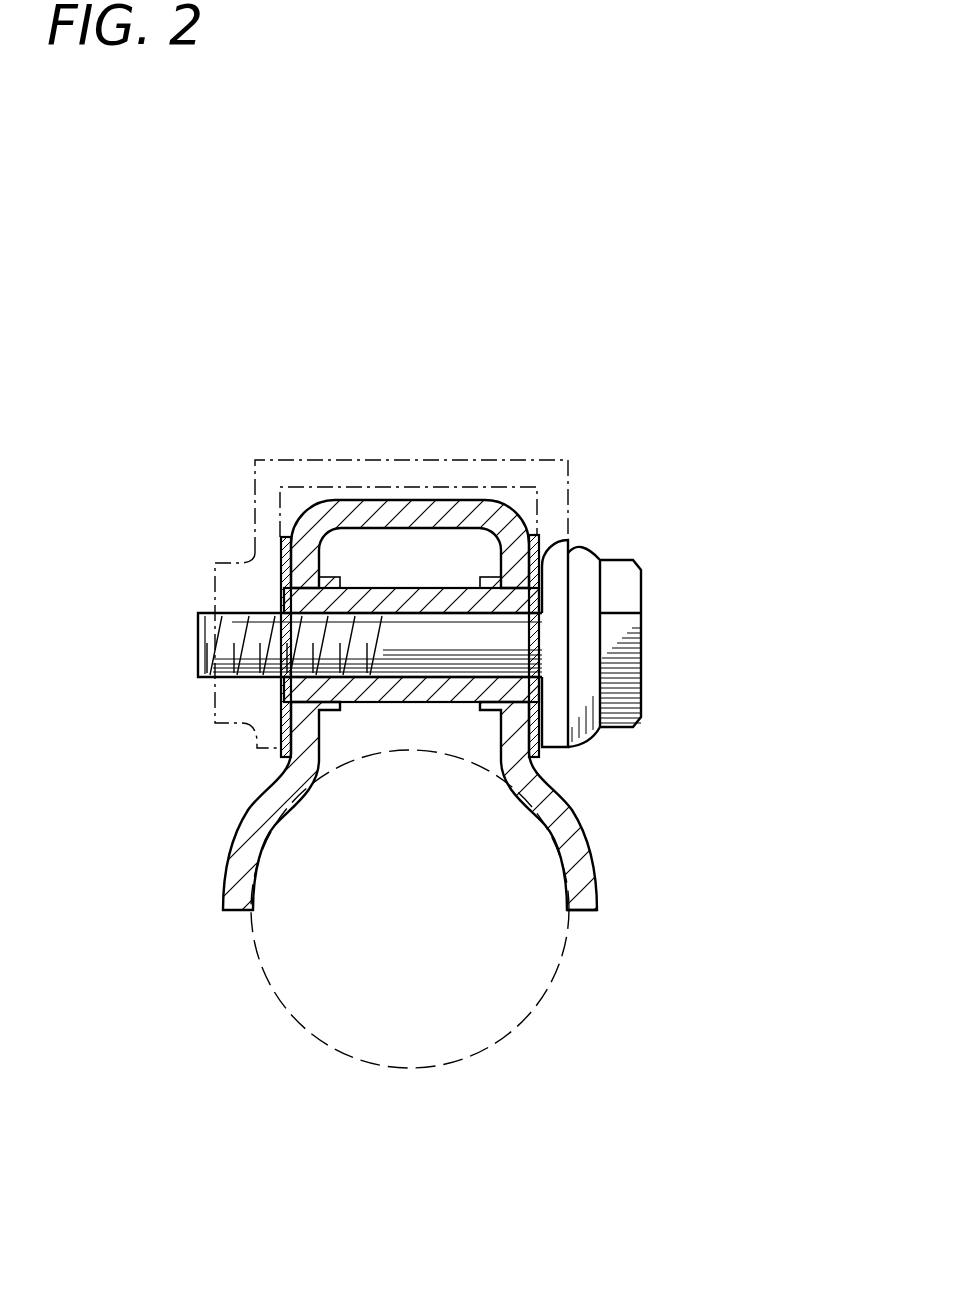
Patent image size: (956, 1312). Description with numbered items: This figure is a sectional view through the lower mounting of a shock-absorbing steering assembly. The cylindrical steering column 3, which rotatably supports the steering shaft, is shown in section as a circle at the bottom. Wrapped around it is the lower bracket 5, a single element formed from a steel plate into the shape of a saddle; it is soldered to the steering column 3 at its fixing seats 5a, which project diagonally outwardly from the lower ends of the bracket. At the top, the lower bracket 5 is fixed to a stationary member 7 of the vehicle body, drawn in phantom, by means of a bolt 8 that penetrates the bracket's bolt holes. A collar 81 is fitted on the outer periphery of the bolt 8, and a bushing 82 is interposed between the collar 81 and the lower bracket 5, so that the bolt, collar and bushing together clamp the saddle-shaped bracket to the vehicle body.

The steering column 3 is at (327, 1043).
The lower bracket 5 is at (233, 805).
The fixing seats 5a is at (583, 875).
The stationary member 7 is at (465, 460).
The bolt 8 is at (642, 632).
The collar 81 is at (540, 600).
The bushing 82 is at (281, 564).